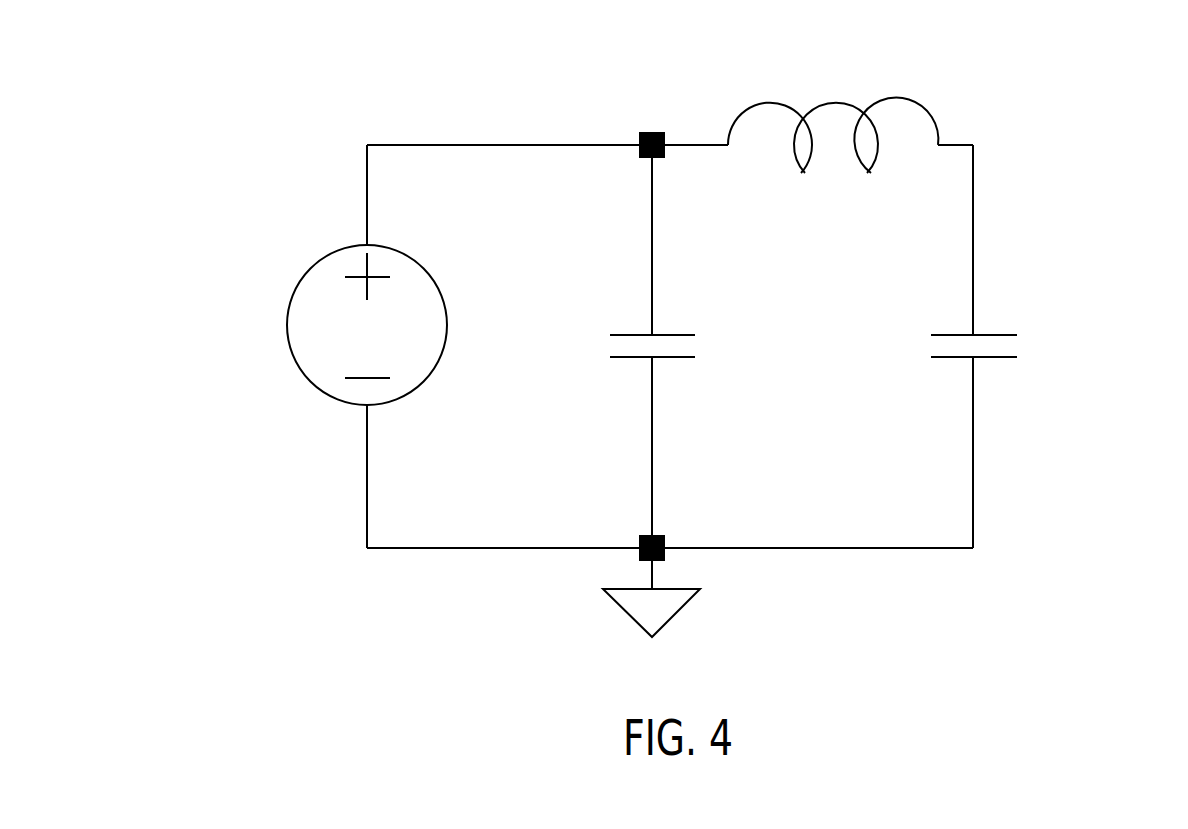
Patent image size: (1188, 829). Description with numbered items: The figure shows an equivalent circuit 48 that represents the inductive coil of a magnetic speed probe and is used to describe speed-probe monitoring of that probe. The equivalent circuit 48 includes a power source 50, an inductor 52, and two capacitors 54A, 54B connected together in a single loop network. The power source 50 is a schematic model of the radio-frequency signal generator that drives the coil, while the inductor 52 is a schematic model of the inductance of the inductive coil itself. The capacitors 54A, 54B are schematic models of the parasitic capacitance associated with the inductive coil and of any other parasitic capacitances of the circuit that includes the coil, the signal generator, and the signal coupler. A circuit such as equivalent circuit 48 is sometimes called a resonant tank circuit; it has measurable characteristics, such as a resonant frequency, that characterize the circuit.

The equivalent circuit 48 is at (1066, 124).
The power source 50 is at (287, 325).
The inductor 52 is at (920, 110).
The capacitor 54A is at (681, 359).
The capacitor 54B is at (1006, 359).